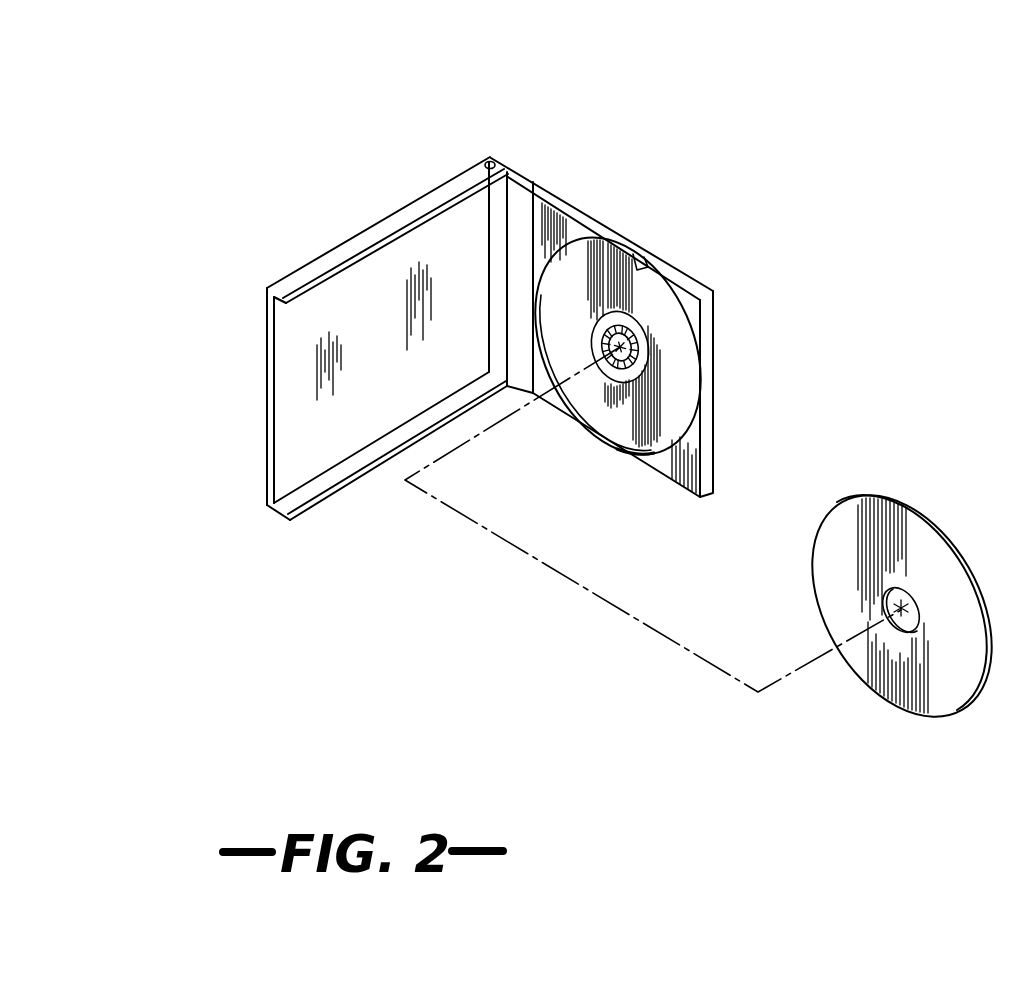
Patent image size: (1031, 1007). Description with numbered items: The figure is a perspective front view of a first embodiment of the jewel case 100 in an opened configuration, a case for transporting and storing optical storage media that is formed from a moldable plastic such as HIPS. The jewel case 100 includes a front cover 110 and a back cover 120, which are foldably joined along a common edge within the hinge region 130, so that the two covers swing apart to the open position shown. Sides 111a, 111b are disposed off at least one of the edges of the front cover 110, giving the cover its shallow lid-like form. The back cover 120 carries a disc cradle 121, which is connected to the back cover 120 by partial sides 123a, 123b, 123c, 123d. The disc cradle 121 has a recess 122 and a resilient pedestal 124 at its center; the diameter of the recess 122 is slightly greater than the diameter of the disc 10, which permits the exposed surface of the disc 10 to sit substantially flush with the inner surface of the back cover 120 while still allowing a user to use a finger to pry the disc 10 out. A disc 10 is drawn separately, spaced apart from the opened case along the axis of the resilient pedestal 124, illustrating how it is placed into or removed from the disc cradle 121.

The jewel case 100 is at (425, 105).
The front cover 110 is at (328, 341).
The side 111a is at (363, 237).
The side 111b is at (365, 457).
The back cover 120 is at (571, 203).
The disc cradle 121 is at (673, 347).
The recess 122 is at (628, 238).
The partial side 123a is at (545, 188).
The partial side 123b is at (547, 400).
The partial side 123c is at (667, 267).
The partial side 123d is at (668, 478).
The resilient pedestal 124 is at (600, 333).
The hinge region 130 is at (492, 155).
The disc 10 is at (925, 577).